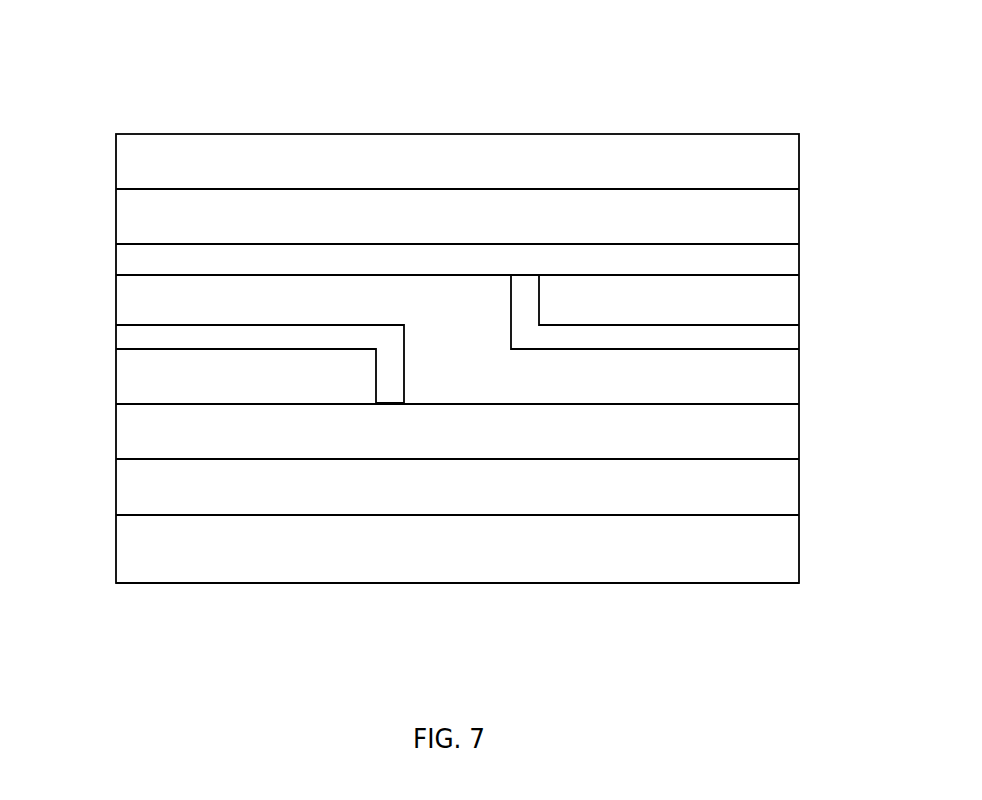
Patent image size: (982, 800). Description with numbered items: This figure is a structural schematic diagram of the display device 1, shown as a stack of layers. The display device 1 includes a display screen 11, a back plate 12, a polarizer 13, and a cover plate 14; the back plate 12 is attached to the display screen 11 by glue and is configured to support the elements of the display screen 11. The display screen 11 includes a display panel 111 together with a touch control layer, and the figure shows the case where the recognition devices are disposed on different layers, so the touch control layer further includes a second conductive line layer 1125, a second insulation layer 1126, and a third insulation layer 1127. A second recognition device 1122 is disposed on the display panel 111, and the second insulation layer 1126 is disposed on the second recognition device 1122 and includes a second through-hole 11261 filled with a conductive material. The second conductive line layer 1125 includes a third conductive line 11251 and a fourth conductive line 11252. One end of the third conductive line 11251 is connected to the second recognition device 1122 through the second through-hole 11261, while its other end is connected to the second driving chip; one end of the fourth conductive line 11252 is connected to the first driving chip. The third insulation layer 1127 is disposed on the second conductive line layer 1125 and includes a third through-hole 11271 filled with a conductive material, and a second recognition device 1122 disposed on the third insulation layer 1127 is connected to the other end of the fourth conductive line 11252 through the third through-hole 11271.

The display device 1 is at (206, 74).
The display screen 11 is at (101, 328).
The display panel 111 is at (764, 507).
The second recognition device 1122 is at (773, 267).
The second conductive line layer 1125 is at (540, 625).
The third conductive line 11251 is at (323, 338).
The fourth conductive line 11252 is at (634, 338).
The second insulation layer 1126 is at (140, 388).
The second through-hole 11261 is at (400, 370).
The third insulation layer 1127 is at (765, 320).
The third through-hole 11271 is at (530, 286).
The back plate 12 is at (767, 563).
The polarizer 13 is at (777, 230).
The cover plate 14 is at (768, 178).